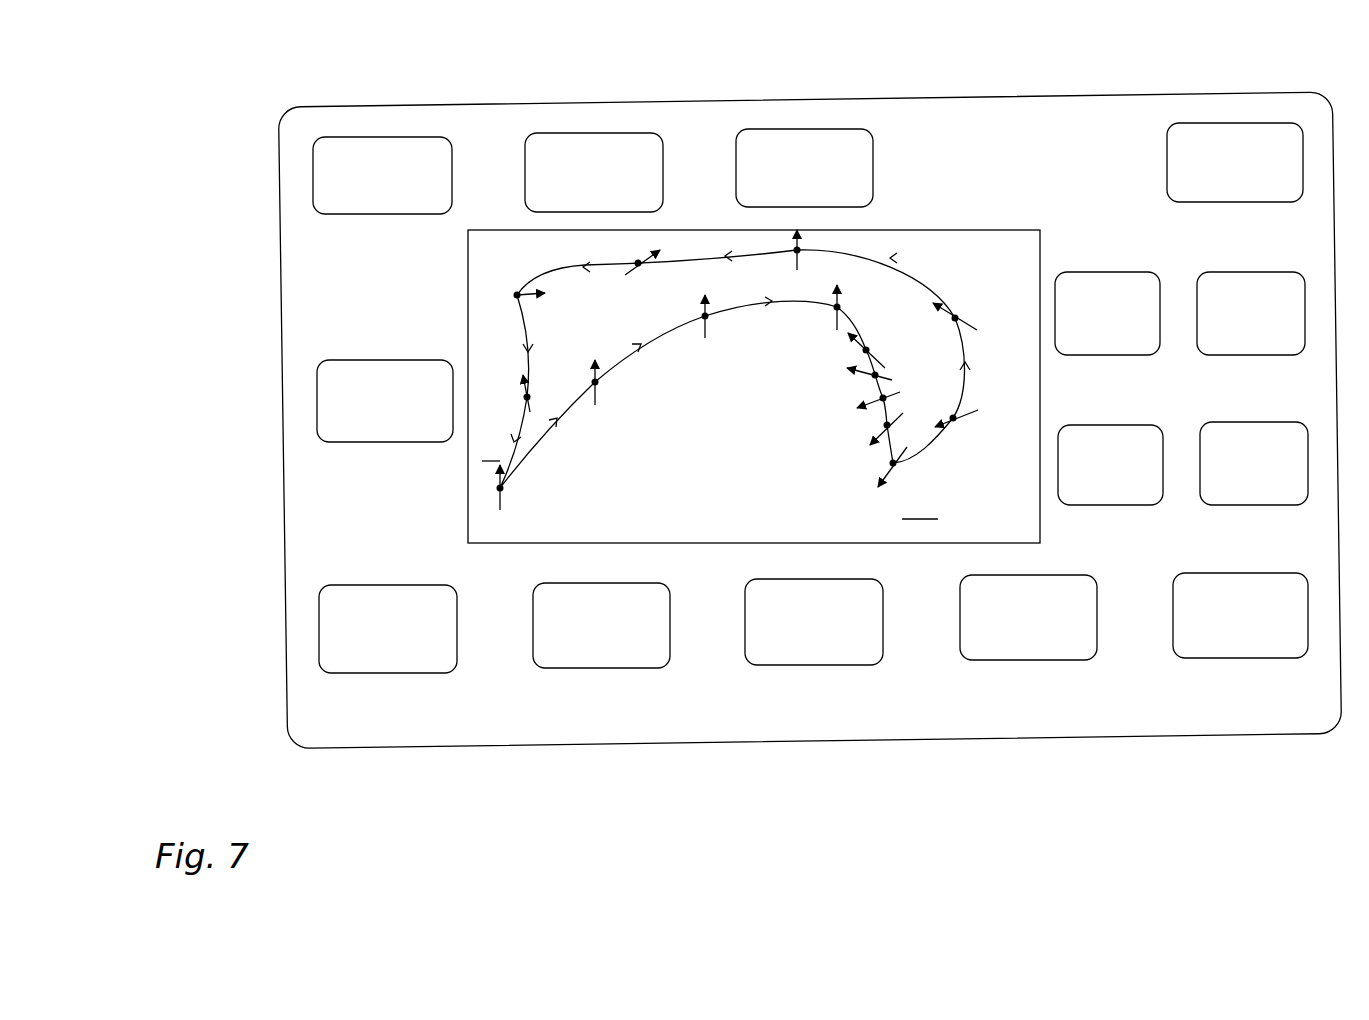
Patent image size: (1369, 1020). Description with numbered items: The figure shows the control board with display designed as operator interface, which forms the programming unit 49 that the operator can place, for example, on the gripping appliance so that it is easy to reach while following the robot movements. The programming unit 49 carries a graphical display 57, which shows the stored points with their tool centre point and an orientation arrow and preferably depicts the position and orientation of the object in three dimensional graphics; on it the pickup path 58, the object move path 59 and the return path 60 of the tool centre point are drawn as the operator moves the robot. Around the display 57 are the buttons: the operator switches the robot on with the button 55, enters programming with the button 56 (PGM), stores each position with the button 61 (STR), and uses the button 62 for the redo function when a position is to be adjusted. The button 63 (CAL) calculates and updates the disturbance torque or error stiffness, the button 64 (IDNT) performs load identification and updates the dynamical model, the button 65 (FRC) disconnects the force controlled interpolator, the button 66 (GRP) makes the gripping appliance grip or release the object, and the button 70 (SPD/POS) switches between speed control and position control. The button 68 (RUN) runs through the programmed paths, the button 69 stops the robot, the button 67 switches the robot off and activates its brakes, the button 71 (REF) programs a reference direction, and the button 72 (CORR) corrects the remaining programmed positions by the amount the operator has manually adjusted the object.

The programming unit 49 is at (922, 152).
The ON button 55 is at (343, 397).
The PGM button 56 is at (332, 638).
The graphical display 57 is at (480, 503).
The pickup path 58 is at (553, 272).
The object move path 59 is at (665, 333).
The return path 60 is at (927, 280).
The STR button 61 is at (593, 655).
The REDO button 62 is at (813, 653).
The CAL button 63 is at (1023, 650).
The IDNT button 64 is at (1218, 645).
The FRC button 65 is at (1067, 445).
The GRP button 66 is at (1213, 445).
The OFF button 67 is at (1192, 137).
The RUN button 68 is at (368, 145).
The STOP button 69 is at (614, 138).
The SPD/POS button 70 is at (1070, 285).
The REF button 71 is at (1215, 283).
The CORR button 72 is at (789, 143).